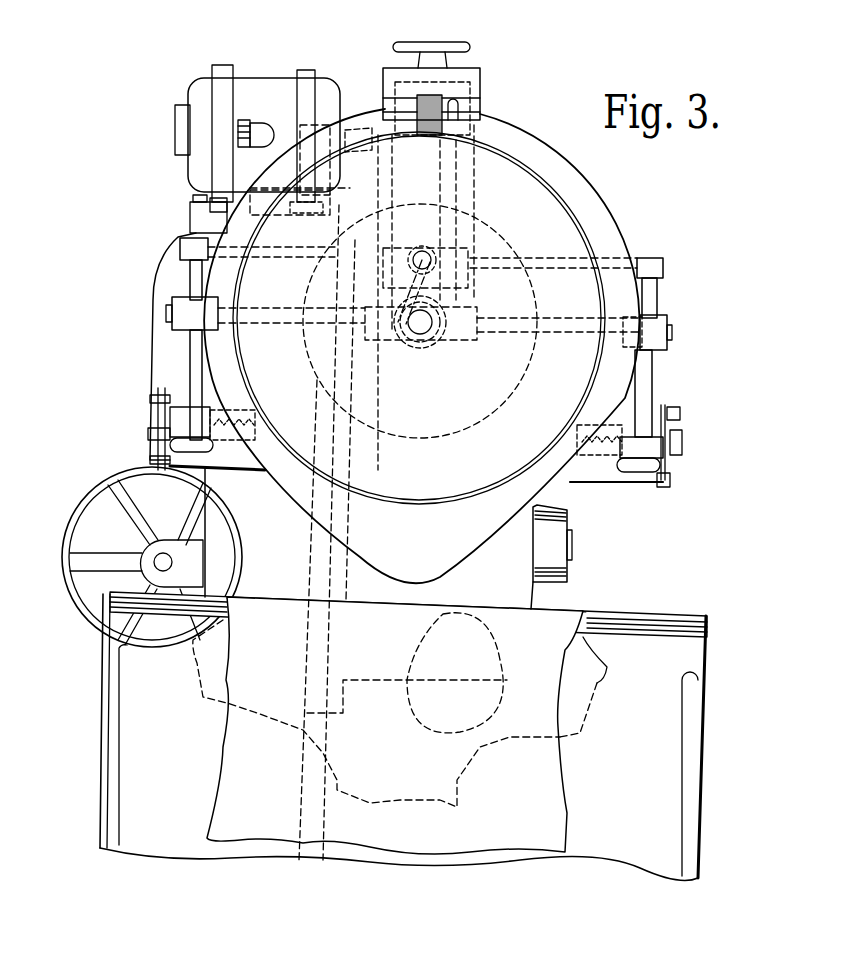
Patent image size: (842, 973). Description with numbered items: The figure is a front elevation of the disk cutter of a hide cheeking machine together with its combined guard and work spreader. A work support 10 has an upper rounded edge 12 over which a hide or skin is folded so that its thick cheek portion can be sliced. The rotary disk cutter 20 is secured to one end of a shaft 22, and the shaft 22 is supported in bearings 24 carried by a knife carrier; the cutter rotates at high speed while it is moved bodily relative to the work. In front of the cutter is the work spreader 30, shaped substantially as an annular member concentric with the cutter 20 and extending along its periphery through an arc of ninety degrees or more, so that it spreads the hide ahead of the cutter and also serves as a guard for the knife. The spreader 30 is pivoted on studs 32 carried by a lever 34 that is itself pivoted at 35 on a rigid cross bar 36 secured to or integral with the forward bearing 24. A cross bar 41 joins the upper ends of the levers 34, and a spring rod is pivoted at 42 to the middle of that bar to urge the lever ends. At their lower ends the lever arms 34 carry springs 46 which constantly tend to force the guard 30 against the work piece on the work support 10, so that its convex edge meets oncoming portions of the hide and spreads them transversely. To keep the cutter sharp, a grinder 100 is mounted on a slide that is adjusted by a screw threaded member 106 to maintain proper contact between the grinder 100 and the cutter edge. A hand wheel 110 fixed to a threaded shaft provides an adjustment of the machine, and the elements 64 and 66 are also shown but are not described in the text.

The work support 10 is at (672, 733).
The upper rounded edge 12 is at (650, 643).
The rotary disk cutter 20 is at (475, 493).
The shaft 22 is at (418, 333).
The bearings 24 is at (431, 342).
The work spreader 30 is at (455, 549).
The studs 32 is at (150, 429).
The lever 34 is at (190, 276).
The pivot 35 is at (172, 318).
The rigid cross bar 36 is at (463, 345).
The cross bar 41 is at (212, 250).
The pivot 42 is at (422, 251).
The springs 46 is at (665, 471).
The lever 64 is at (358, 133).
The motor 66 is at (271, 86).
The grinder 100 is at (447, 98).
The screw threaded member 106 is at (462, 48).
The hand wheel 110 is at (66, 524).